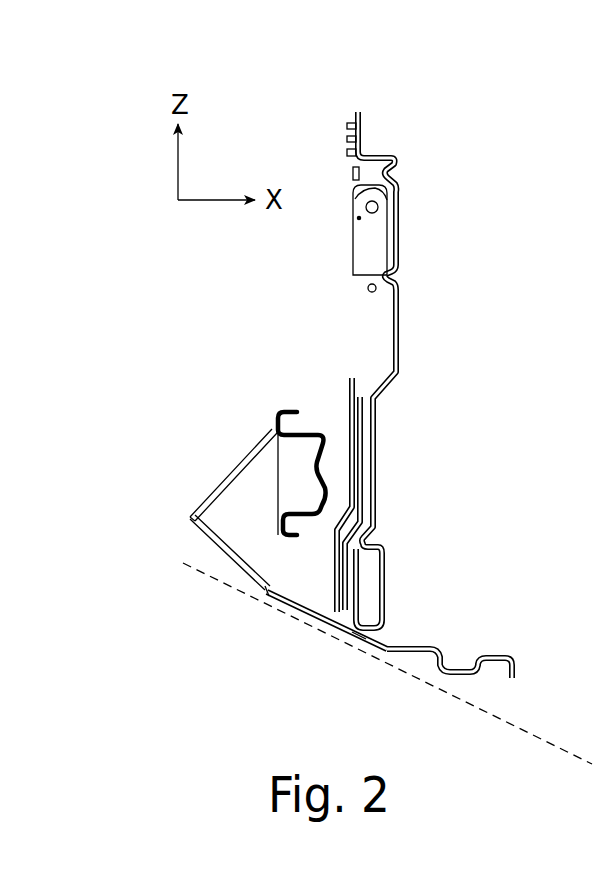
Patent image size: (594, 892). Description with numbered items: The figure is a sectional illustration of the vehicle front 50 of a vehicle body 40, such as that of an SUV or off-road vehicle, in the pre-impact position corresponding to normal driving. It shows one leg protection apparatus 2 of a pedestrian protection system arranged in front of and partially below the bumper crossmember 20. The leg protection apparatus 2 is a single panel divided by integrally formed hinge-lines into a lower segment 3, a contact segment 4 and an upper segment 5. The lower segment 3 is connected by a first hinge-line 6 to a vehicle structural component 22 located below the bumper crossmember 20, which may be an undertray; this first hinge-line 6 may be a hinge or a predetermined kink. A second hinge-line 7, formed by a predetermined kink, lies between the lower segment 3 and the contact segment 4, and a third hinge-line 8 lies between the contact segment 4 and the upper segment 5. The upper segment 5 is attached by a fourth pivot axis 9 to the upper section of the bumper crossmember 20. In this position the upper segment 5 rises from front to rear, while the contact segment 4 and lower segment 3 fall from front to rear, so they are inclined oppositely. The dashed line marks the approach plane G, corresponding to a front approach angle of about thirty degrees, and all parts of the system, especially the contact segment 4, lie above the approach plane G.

The leg protection apparatus 2 is at (362, 687).
The lower segment 3 is at (318, 618).
The contact segment 4 is at (228, 563).
The upper segment 5 is at (232, 475).
The first hinge-line 6 is at (358, 646).
The second hinge-line 7 is at (262, 598).
The third hinge-line 8 is at (185, 520).
The fourth pivot axis 9 is at (273, 417).
The bumper crossmember 20 is at (337, 505).
The vehicle structural component 22 is at (424, 670).
The vehicle body 40 is at (461, 142).
The vehicle front 50 is at (312, 165).
The approach plane G is at (490, 716).